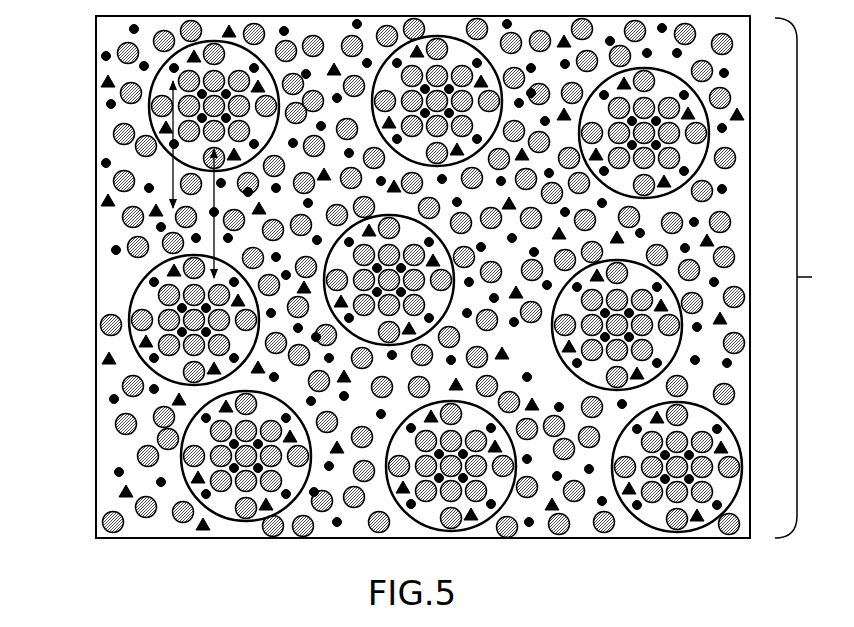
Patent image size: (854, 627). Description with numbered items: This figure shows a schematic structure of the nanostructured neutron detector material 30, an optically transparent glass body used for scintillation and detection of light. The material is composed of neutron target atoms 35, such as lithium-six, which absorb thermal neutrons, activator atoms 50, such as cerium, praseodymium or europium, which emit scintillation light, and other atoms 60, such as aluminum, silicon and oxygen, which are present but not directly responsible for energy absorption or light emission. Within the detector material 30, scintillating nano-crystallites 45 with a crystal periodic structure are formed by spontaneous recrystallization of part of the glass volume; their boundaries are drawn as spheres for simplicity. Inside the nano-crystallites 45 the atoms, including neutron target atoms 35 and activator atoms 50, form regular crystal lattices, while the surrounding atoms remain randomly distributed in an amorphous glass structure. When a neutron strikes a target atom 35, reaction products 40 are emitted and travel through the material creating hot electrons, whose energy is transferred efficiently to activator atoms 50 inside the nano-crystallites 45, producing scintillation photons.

The neutron detector material 30 is at (811, 278).
The neutron target atoms 35 is at (95, 52).
The reaction products 40 is at (167, 169).
The scintillating nano-crystallites 45 is at (130, 285).
The activator atoms 50 is at (95, 357).
The other atoms 60 is at (98, 521).